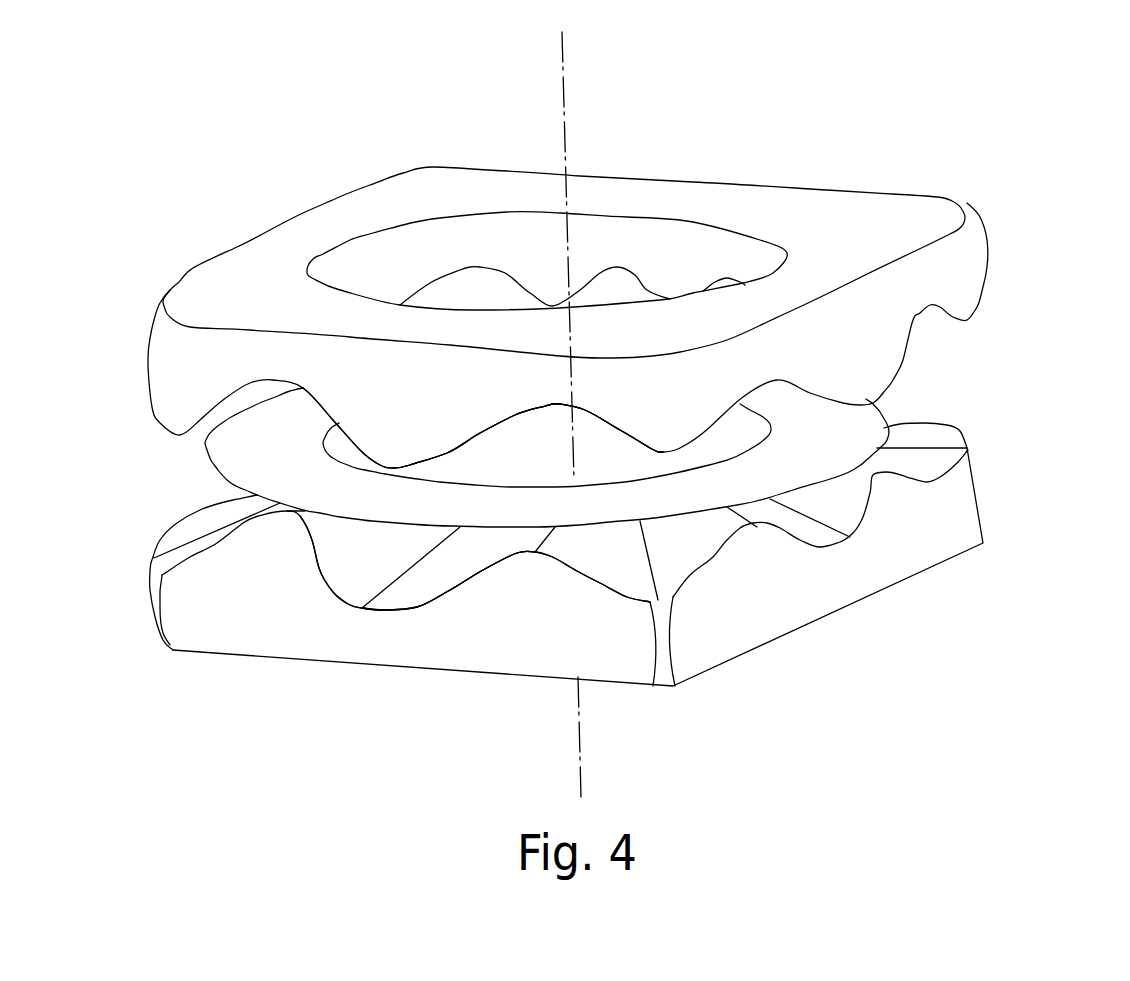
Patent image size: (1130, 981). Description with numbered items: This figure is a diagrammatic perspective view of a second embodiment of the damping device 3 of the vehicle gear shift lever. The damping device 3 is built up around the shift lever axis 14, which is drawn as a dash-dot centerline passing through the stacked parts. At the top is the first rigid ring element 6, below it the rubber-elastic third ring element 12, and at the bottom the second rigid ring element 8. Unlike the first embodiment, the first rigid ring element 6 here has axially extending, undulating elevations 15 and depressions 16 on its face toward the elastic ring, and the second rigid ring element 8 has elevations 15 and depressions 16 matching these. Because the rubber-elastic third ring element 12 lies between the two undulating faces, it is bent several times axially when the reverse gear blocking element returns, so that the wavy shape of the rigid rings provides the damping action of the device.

The damping device 3 is at (1023, 153).
The first rigid ring element 6 is at (893, 213).
The second rigid ring element 8 is at (905, 548).
The rubber-elastic third ring element 12 is at (227, 448).
The shift lever axis 14 is at (562, 65).
The elevations 15 is at (392, 467).
The depressions 16 is at (555, 406).